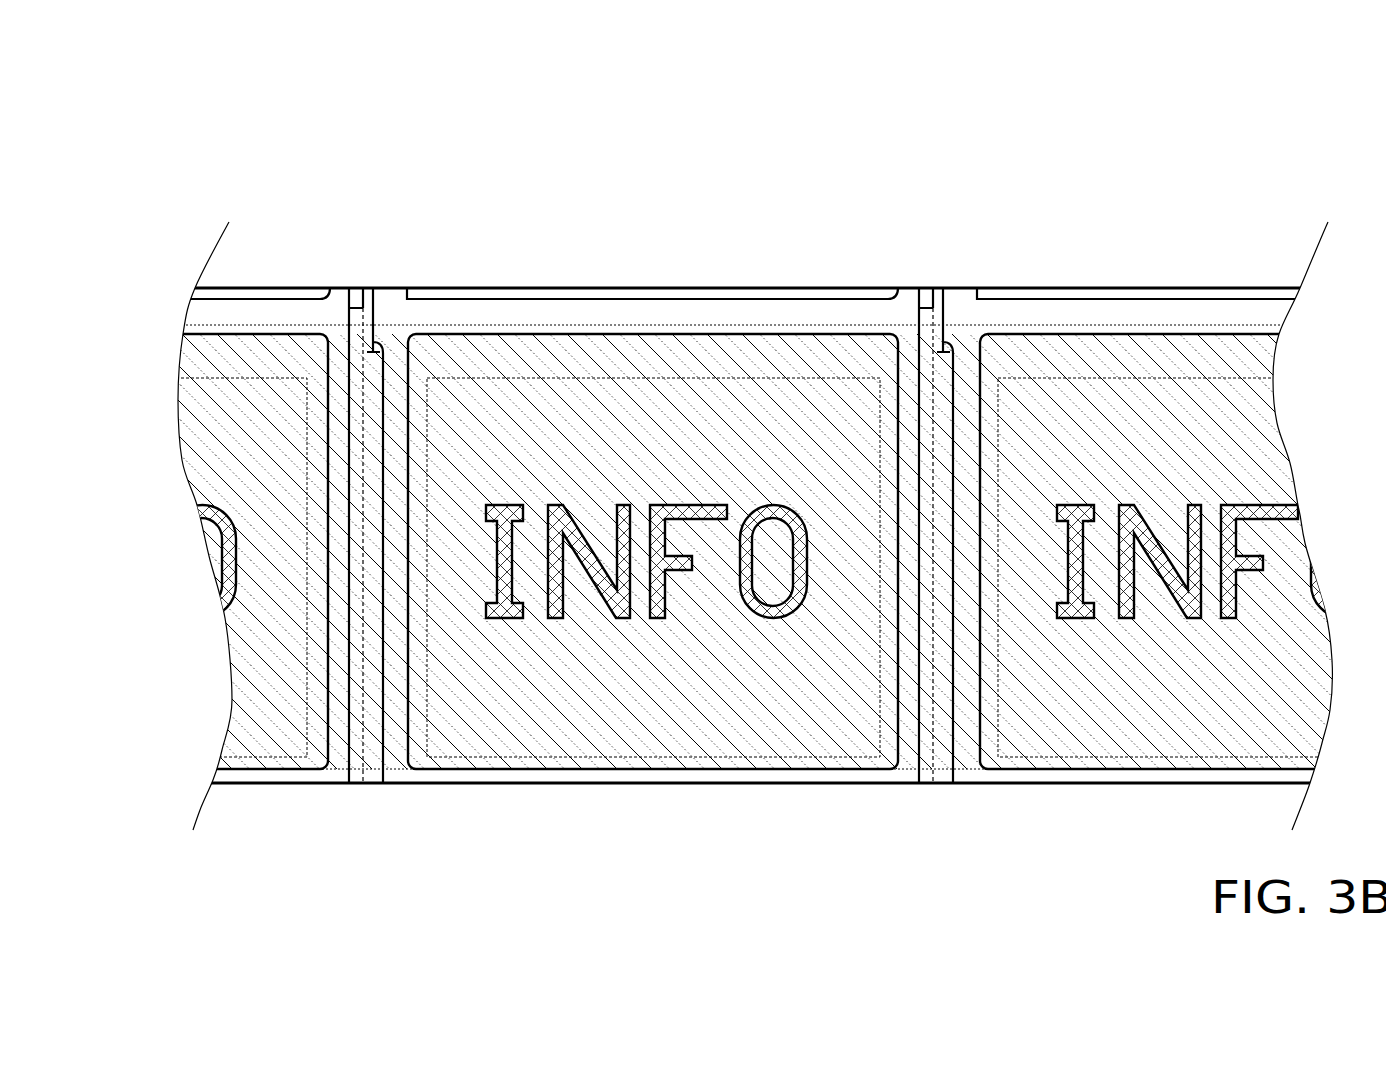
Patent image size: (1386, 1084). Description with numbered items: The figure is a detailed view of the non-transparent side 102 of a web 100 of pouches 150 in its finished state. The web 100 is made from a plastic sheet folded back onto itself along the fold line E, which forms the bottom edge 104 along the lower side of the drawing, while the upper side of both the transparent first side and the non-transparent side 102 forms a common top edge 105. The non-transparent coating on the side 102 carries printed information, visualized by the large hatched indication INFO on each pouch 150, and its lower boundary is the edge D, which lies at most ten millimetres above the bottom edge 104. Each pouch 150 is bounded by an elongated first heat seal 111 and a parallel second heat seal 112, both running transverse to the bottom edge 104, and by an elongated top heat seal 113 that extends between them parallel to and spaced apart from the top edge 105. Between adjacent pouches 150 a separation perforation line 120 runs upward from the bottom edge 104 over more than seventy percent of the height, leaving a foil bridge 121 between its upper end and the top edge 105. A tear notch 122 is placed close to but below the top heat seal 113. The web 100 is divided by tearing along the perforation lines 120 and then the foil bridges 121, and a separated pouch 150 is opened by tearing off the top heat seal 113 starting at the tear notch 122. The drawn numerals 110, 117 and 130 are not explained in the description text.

The web 100 is at (175, 173).
The non-transparent side 102 is at (195, 357).
The bottom edge 104 is at (550, 787).
The top edge 105 is at (503, 287).
The top cover layer 110 is at (233, 296).
The first heat seal 111 is at (340, 462).
The second heat seal 112 is at (440, 758).
The top heat seal 113 is at (272, 300).
The hatched region 117 is at (690, 735).
The separation perforation line 120 is at (377, 772).
The foil bridge 121 is at (336, 292).
The tear notch 122 is at (383, 345).
The information indicia 130 is at (770, 757).
The pouch 150 is at (613, 390).
The edge of the non-transparent strip D is at (213, 770).
The fold line E is at (615, 787).